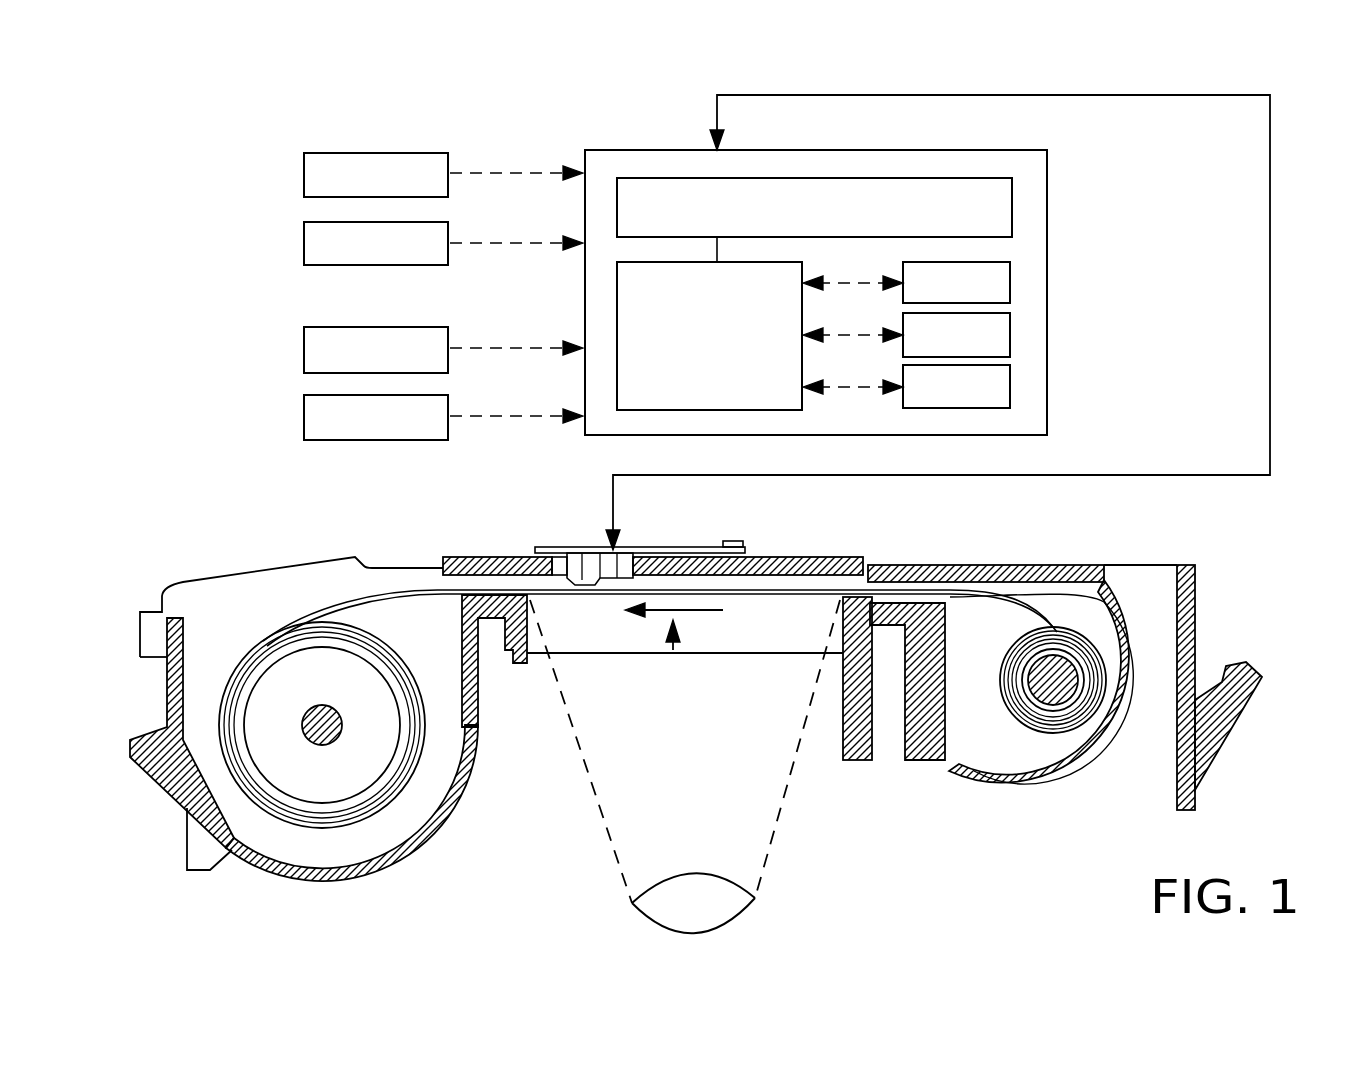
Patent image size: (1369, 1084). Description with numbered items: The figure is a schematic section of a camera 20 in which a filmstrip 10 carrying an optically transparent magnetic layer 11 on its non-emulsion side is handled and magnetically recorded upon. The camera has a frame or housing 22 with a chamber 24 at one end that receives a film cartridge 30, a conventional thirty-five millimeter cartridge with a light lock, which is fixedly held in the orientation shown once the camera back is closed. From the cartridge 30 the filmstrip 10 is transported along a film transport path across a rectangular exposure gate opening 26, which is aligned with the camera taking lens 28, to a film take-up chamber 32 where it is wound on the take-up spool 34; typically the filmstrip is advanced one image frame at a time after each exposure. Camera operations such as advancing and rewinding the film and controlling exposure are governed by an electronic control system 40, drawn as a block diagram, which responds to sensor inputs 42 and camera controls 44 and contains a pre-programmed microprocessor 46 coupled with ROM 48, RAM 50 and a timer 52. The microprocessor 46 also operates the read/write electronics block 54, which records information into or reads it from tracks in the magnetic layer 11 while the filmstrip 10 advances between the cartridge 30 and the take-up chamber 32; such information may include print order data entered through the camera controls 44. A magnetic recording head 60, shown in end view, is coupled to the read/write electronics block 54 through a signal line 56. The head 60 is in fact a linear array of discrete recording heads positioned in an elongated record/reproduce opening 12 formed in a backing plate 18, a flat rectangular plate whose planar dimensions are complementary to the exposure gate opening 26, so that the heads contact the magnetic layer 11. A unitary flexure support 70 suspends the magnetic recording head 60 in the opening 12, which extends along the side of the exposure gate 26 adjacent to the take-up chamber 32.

The filmstrip 10 is at (787, 600).
The magnetic layer 11 is at (430, 594).
The record/reproduce opening 12 is at (552, 556).
The backing plate 18 is at (818, 562).
The camera 20 is at (195, 520).
The frame or housing 22 is at (960, 790).
The chamber 24 is at (1150, 576).
The exposure gate opening 26 is at (673, 650).
The camera taking lens 28 is at (692, 872).
The film cartridge 30 is at (1123, 633).
The film take-up chamber 32 is at (413, 805).
The take-up spool 34 is at (276, 678).
The electronic control system 40 is at (590, 124).
The sensor inputs 42 is at (304, 172).
The camera controls 44 is at (304, 350).
The microprocessor 46 is at (692, 393).
The ROM 48 is at (1010, 283).
The RAM 50 is at (1010, 335).
The timer 52 is at (1010, 387).
The read/write electronics block 54 is at (1012, 207).
The signal line 56 is at (1270, 295).
The magnetic recording head 60 is at (640, 548).
The unitary flexure support 70 is at (595, 548).